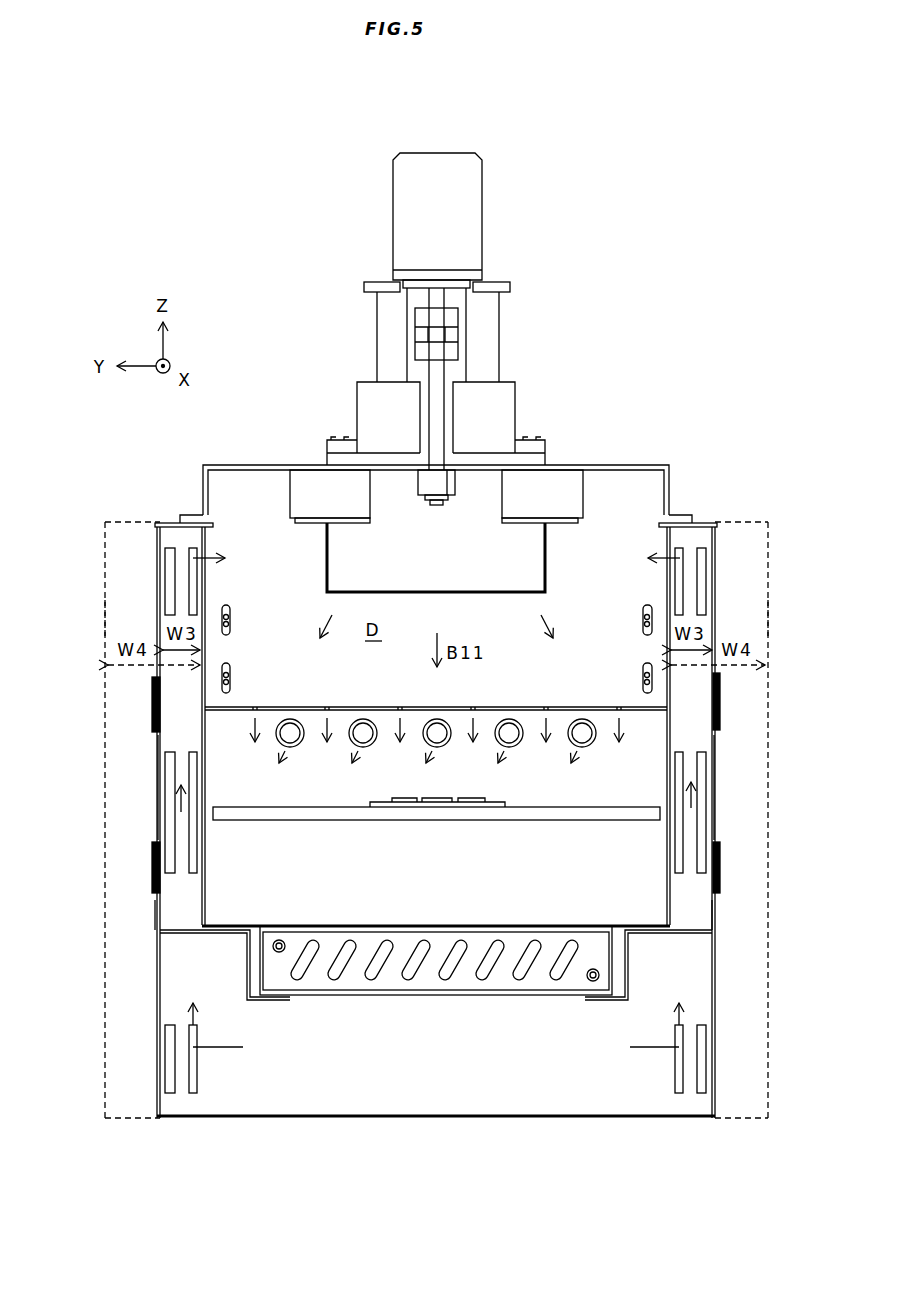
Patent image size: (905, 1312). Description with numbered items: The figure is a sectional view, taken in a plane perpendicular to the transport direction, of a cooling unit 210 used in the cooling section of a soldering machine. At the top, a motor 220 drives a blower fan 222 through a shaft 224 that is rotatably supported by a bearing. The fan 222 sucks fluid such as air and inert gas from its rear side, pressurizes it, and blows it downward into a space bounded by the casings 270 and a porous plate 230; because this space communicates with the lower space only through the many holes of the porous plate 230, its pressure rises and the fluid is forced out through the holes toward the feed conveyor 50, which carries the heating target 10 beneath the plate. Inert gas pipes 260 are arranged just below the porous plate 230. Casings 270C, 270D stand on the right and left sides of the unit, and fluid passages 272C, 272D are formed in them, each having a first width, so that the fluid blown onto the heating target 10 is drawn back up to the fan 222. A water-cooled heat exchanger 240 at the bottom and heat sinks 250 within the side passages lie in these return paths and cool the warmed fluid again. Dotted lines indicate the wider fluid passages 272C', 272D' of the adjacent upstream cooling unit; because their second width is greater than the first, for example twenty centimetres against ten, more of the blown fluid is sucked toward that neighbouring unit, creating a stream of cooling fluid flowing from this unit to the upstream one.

The heating target 10 is at (493, 800).
The feed conveyor 50 is at (568, 822).
The cooling unit 210 is at (585, 412).
The motor 220 is at (470, 220).
The blower fan 222 is at (548, 562).
The shaft 224 is at (437, 375).
The porous plate 230 is at (578, 706).
The water-cooled heat exchanger 240 is at (490, 998).
The heat sinks 250 is at (167, 582).
The inert gas pipes 260 is at (280, 743).
The casings 270 is at (247, 465).
The casing 270C is at (716, 742).
The casing 270D is at (157, 748).
The fluid passage 272C is at (765, 801).
The fluid passage 272C' is at (793, 620).
The fluid passage 272D is at (105, 803).
The fluid passage 272D' is at (74, 620).